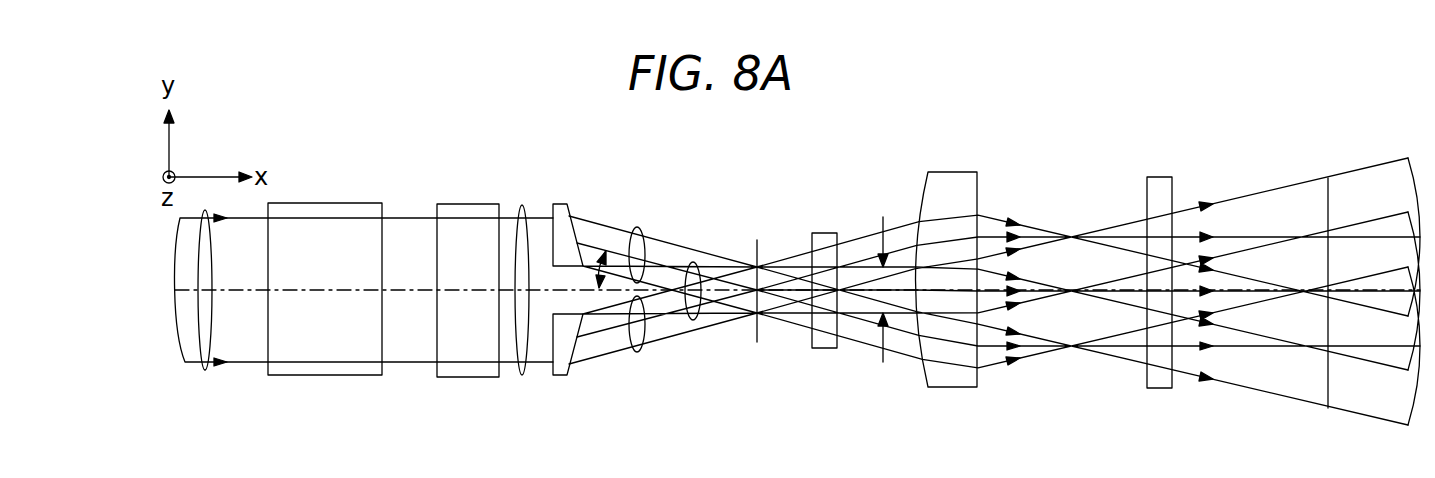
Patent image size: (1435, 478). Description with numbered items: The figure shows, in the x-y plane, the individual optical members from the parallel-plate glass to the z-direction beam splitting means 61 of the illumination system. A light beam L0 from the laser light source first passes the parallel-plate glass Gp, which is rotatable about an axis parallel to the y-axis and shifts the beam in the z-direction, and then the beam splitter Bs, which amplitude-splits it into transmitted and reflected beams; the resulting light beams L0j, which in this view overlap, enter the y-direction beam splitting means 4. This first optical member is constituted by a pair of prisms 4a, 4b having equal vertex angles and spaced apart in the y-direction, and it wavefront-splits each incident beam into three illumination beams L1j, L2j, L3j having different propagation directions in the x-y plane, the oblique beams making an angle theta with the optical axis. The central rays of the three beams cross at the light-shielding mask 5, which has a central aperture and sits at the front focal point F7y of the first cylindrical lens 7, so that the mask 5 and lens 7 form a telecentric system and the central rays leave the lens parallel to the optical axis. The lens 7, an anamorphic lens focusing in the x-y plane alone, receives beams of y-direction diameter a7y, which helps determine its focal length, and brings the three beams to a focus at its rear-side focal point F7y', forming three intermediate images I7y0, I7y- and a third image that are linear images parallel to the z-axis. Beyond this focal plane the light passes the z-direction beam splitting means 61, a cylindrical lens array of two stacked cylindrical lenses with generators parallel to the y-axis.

The y-direction beam splitting means 4 is at (530, 240).
The prism 4a is at (559, 204).
The prism 4b is at (568, 293).
The light-shielding mask 5 is at (757, 241).
The first cylindrical lens 7 is at (943, 172).
The z-direction beam splitting means 61 is at (1152, 177).
The light beam L0 is at (205, 375).
The parallel-plate glass Gp is at (325, 203).
The beam splitter Bs is at (449, 204).
The illumination light beam L0j is at (522, 378).
The illumination beam L1j is at (637, 352).
The illumination beam L2j is at (693, 322).
The illumination beam L3j is at (640, 230).
The front focal point F7y is at (785, 354).
The rear-side focal point position F7y' is at (1063, 317).
The diameter of the illumination beam in the y-direction a7y is at (889, 276).
The angle of the obliquely emerging illumination beam theta is at (600, 248).
The intermediate image I7y0 is at (1068, 290).
The intermediate image I7y- is at (1075, 350).